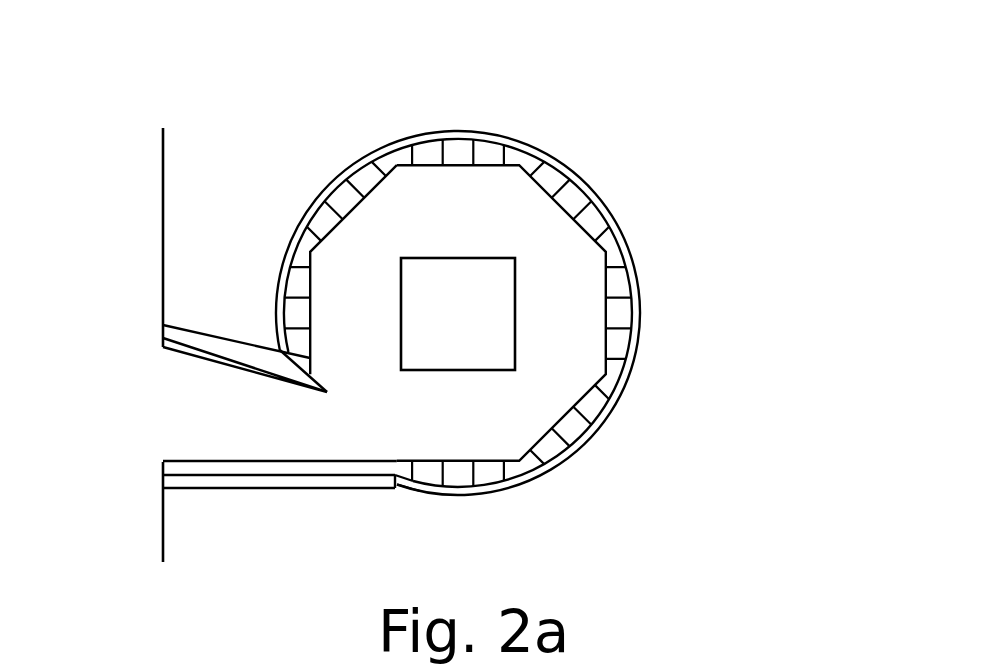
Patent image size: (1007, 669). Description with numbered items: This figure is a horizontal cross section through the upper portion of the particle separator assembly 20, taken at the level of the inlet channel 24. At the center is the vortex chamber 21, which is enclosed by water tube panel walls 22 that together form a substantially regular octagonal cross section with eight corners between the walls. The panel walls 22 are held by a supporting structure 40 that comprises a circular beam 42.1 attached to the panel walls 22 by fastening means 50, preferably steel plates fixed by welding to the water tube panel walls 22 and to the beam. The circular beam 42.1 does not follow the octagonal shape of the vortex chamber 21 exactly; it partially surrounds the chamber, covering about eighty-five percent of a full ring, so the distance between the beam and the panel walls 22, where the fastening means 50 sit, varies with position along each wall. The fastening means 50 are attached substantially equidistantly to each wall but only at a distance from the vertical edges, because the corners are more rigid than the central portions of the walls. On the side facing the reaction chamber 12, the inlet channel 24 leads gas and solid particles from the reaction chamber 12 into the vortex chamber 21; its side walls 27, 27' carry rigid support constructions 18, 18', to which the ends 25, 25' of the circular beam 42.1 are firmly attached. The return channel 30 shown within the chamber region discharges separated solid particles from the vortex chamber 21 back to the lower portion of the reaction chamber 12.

The particle separator assembly 20 is at (360, 88).
The fastening means 50 is at (457, 152).
The supporting structure 40 is at (540, 148).
The circular beam 42.1 is at (557, 163).
The return channel 30 is at (468, 314).
The vortex chamber 21 is at (478, 230).
The water tube panel walls 22 is at (575, 418).
The rigid support construction 18' is at (203, 298).
The end of the circular beam 25' is at (262, 305).
The side wall of the inlet channel 27' is at (180, 314).
The reaction chamber 12 is at (102, 367).
The inlet channel 24 is at (225, 420).
The rigid support construction 18 is at (279, 514).
The side wall of the inlet channel 27 is at (283, 507).
The end of the circular beam 25 is at (446, 525).